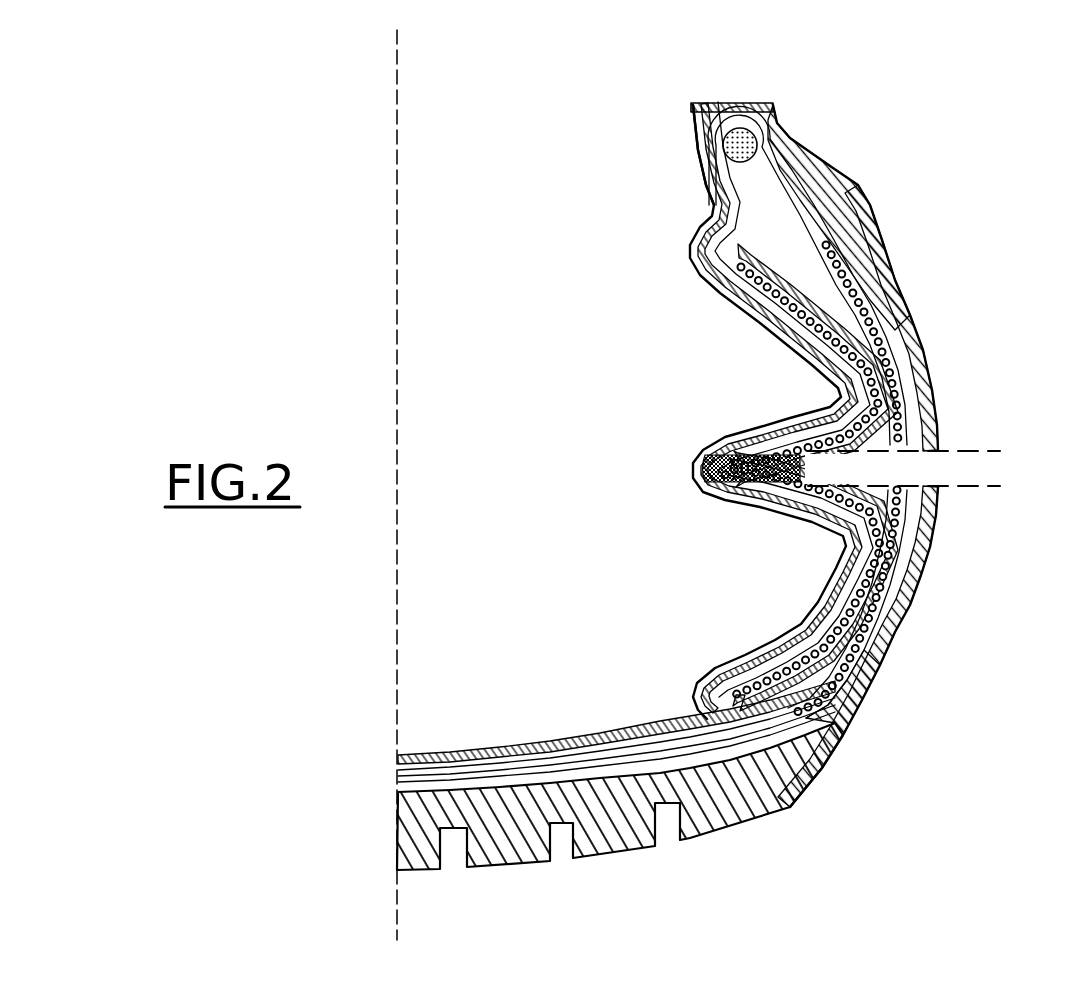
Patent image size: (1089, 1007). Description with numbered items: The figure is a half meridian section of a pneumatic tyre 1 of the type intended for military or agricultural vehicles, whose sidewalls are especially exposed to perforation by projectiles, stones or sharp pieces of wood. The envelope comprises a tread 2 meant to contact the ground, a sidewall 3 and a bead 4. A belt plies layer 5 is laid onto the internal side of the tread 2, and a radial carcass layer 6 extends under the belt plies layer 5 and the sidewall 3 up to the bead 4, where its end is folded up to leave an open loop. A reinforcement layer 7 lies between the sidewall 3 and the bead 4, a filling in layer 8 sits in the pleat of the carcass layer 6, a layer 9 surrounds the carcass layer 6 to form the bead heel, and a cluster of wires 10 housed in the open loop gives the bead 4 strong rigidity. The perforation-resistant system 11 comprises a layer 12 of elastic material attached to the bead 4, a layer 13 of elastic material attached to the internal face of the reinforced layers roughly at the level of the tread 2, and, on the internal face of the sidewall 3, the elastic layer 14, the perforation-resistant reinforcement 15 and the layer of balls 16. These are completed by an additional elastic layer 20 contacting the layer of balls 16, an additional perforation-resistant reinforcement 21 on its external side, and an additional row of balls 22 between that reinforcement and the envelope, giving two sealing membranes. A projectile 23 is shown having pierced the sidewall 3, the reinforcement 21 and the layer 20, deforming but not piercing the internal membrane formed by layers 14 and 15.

The pneumatic tyre 1 is at (985, 346).
The tread 2 is at (620, 852).
The sidewall 3 is at (927, 520).
The bead 4 is at (733, 102).
The belt plies layer 5 is at (818, 775).
The carcass layer 6 is at (890, 623).
The reinforcement layer 7 is at (862, 260).
The filling in layer 8 is at (772, 213).
The bead heel layer 9 is at (847, 175).
The cluster of wires 10 is at (770, 123).
The perforation-resistant system 11 is at (760, 325).
The elastic material layer 12 is at (707, 158).
The elastic material layer 13 is at (448, 756).
The elastic layer 14 is at (750, 508).
The perforation-resistant reinforcement 15 is at (833, 560).
The layer of balls 16 is at (813, 605).
The additional elastic layer 20 is at (875, 567).
The additional perforation-resistant reinforcement 21 is at (867, 643).
The additional row of balls 22 is at (873, 670).
The projectile 23 is at (700, 470).